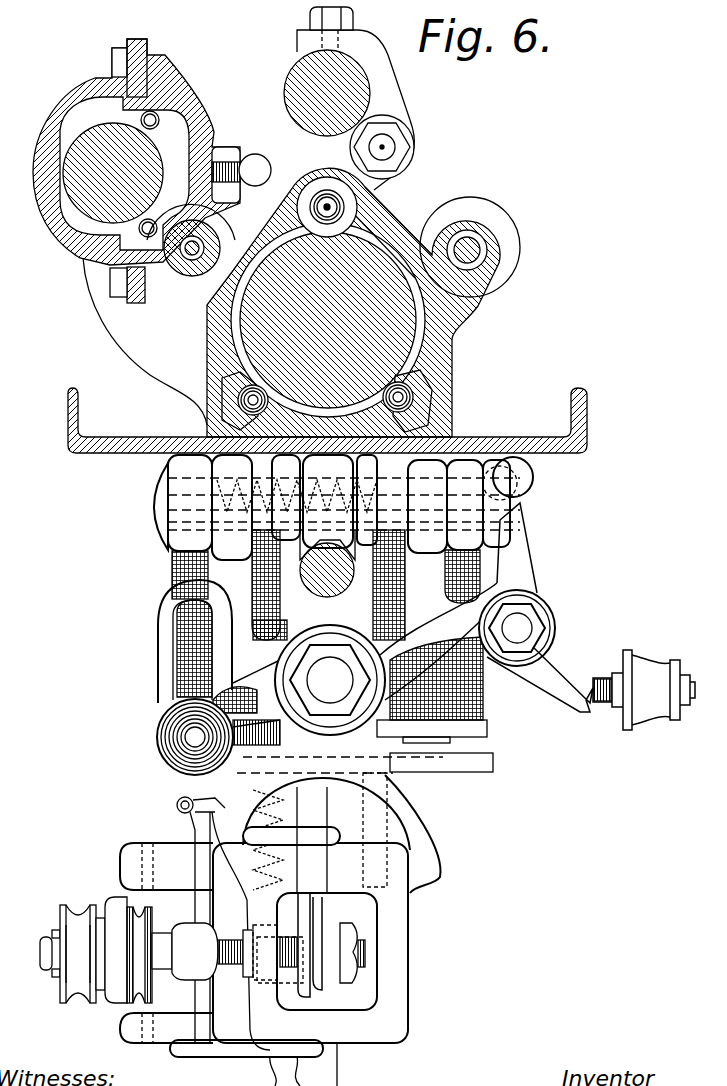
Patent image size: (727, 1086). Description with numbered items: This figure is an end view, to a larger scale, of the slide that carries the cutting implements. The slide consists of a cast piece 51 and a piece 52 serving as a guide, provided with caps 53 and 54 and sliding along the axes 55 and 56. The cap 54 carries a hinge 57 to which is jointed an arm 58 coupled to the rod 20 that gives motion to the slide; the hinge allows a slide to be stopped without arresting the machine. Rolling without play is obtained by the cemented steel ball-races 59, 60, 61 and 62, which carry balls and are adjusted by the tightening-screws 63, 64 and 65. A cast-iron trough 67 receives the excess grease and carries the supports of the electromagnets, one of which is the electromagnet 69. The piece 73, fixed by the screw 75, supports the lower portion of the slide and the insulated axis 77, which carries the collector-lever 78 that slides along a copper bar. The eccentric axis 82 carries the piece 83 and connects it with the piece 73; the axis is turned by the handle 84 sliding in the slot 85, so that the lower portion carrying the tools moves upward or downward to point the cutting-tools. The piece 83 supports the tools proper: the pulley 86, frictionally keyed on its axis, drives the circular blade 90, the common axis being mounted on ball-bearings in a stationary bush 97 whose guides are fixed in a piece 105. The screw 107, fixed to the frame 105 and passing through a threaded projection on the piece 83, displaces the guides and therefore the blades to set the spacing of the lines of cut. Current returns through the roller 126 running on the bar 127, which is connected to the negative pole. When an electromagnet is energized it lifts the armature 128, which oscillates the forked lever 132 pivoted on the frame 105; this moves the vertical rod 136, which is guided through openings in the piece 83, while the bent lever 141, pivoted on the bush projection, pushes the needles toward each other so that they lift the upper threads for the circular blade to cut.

The rod 20 is at (323, 88).
The cast piece 51 is at (97, 102).
The guide piece 52 is at (232, 358).
The cap 53 is at (150, 77).
The cap 54 is at (372, 222).
The axis 55 is at (100, 195).
The axis 56 is at (355, 331).
The hinge 57 is at (386, 151).
The arm 58 is at (390, 90).
The ball-race 59 is at (162, 120).
The ball-race 60 is at (318, 180).
The ball-race 61 is at (235, 398).
The ball-race 62 is at (415, 392).
The tightening-screw 63 is at (248, 162).
The tightening-screw 64 is at (232, 248).
The tightening-screw 65 is at (470, 250).
The cast-iron trough 67 is at (118, 425).
The electromagnet 69 is at (185, 575).
The supporting piece 73 is at (237, 592).
The screw 75 is at (148, 500).
The insulated axis 77 is at (520, 630).
The collector-lever 78 is at (562, 680).
The eccentric axis 82 is at (309, 685).
The tool-carrying piece 83 is at (225, 765).
The handle 84 is at (190, 733).
The slot 85 is at (165, 655).
The pulley 86 is at (72, 918).
The circular blade 90 is at (338, 1068).
The stationary bush 97 is at (148, 930).
The frame piece 105 is at (307, 833).
The screw 107 is at (130, 985).
The roller 126 is at (300, 545).
The bar 127 is at (325, 590).
The armature 128 is at (468, 765).
The forked lever 132 is at (205, 810).
The vertical rod 136 is at (340, 990).
The bent lever 141 is at (305, 913).